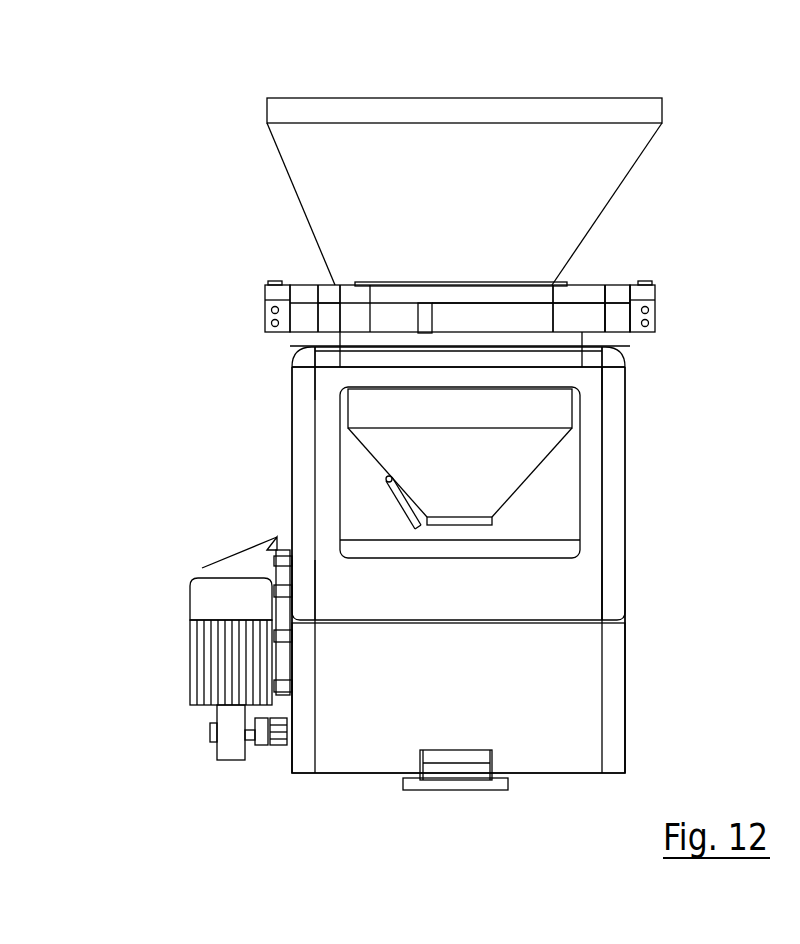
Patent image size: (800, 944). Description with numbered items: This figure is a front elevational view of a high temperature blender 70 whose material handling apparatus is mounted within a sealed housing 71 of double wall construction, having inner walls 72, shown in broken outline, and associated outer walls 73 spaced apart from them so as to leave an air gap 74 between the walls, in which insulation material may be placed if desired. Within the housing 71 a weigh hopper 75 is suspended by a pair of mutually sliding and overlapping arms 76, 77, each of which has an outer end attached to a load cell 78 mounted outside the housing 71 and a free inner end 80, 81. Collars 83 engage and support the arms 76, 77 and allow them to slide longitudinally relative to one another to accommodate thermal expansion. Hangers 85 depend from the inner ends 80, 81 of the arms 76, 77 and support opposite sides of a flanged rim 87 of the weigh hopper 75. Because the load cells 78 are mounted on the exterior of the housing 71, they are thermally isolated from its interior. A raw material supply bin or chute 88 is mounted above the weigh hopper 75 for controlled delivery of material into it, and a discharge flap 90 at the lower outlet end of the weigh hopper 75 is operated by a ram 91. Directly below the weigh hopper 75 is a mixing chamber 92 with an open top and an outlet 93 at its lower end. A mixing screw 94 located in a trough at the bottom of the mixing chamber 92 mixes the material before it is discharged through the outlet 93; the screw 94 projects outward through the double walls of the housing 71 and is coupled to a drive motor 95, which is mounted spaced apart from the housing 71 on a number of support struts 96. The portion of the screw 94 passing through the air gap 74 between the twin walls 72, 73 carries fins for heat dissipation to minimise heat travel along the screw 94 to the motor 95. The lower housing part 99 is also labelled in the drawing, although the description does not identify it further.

The high temperature blender 70 is at (715, 180).
The sealed housing 71 is at (647, 503).
The inner walls 72 is at (313, 502).
The outer walls 73 is at (292, 463).
The air gap 74 is at (618, 463).
The weigh hopper 75 is at (474, 491).
The arm 76 is at (307, 297).
The arm 77 is at (627, 318).
The load cell 78 is at (265, 303).
The free inner end 80 is at (613, 318).
The free inner end 81 is at (328, 315).
The collars 83 is at (432, 310).
The hangers 85 is at (292, 363).
The flanged rim 87 is at (337, 370).
The raw material supply bin or chute 88 is at (517, 137).
The discharge flap 90 is at (453, 527).
The ram 91 is at (398, 503).
The mixing chamber 92 is at (510, 545).
The outlet 93 is at (455, 792).
The mixing screw 94 is at (283, 742).
The drive motor 95 is at (192, 660).
The support struts 96 is at (277, 540).
The lower housing part 99 is at (600, 607).